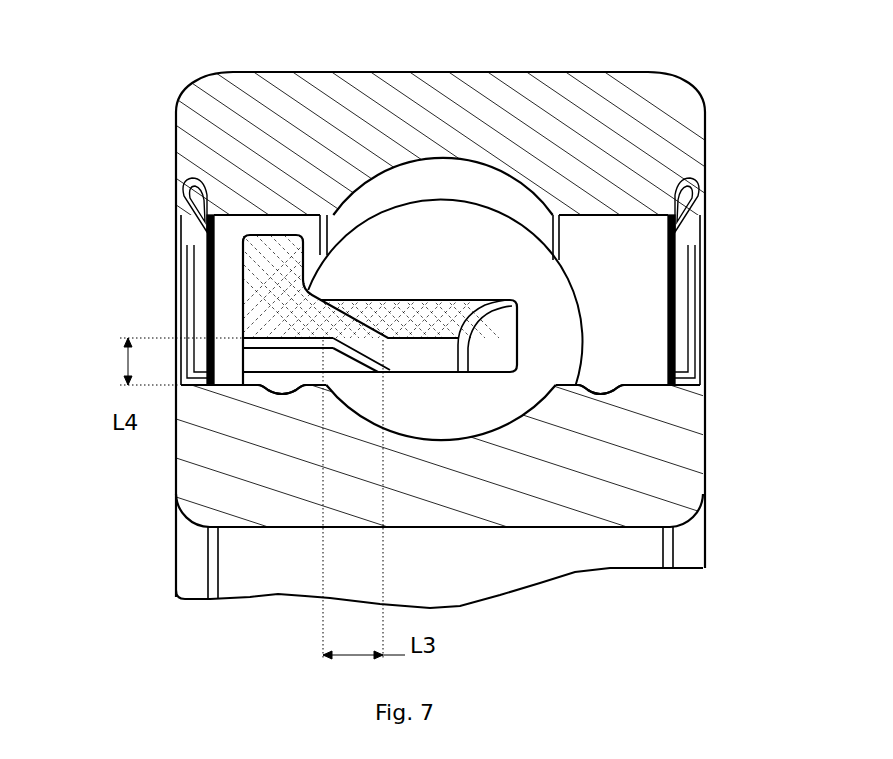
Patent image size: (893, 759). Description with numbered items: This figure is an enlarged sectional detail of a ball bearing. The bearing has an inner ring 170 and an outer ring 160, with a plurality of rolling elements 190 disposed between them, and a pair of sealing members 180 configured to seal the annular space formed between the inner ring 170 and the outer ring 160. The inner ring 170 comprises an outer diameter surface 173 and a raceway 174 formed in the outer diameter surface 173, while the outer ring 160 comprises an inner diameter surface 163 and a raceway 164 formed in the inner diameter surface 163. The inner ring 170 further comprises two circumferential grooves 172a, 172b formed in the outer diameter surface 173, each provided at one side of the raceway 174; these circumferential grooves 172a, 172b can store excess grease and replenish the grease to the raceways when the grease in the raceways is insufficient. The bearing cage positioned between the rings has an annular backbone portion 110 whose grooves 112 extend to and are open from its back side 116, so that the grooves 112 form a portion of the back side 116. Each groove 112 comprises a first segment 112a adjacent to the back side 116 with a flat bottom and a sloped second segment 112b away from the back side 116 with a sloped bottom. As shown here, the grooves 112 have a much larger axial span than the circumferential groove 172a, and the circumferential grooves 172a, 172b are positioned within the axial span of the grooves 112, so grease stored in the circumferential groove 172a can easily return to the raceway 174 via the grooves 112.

The outer ring 160 is at (300, 92).
The raceway 164 is at (483, 163).
The inner diameter surface 163 is at (622, 213).
The back side 116 is at (272, 297).
The annular backbone portion 110 is at (291, 340).
The grooves 112 is at (255, 379).
The first segment 112a is at (273, 365).
The sloped second segment 112b is at (345, 360).
The sealing member 180 is at (695, 272).
The rolling elements 190 is at (550, 336).
The outer diameter surface 173 is at (635, 384).
The circumferential groove 172a is at (260, 387).
The circumferential groove 172b is at (605, 387).
The inner ring 170 is at (410, 478).
The raceway 174 is at (468, 441).